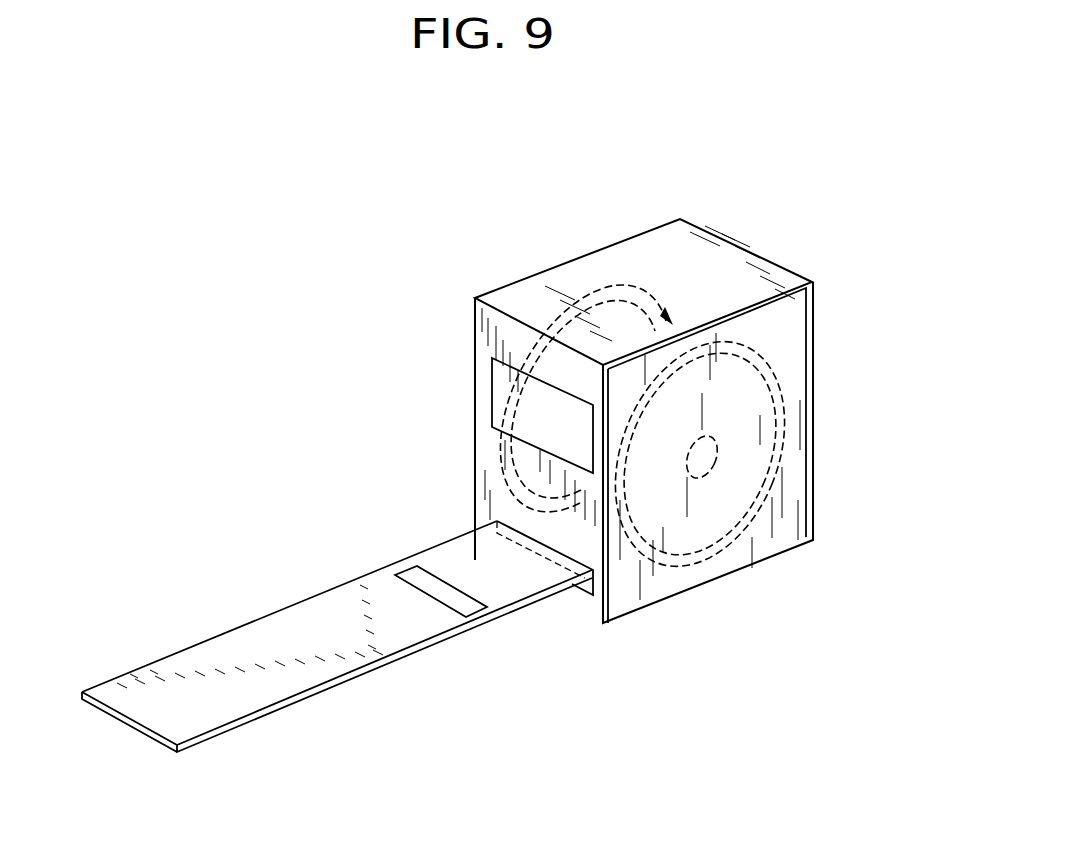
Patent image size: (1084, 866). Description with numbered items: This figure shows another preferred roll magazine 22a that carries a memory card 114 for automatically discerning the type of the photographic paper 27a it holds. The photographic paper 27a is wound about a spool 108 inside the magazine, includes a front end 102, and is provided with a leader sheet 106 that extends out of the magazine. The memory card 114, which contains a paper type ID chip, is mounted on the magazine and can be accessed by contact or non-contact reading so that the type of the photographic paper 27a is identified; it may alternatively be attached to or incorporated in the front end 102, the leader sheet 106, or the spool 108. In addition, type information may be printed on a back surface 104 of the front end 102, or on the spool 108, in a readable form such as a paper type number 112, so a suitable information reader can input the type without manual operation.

The roll magazine 22a is at (598, 244).
The photographic paper 27a is at (770, 494).
The spool 108 is at (706, 432).
The memory card 114 is at (492, 388).
The back surface 104 is at (440, 548).
The leader sheet 106 is at (340, 658).
The front end 102 is at (457, 578).
The paper type number 112 is at (513, 594).